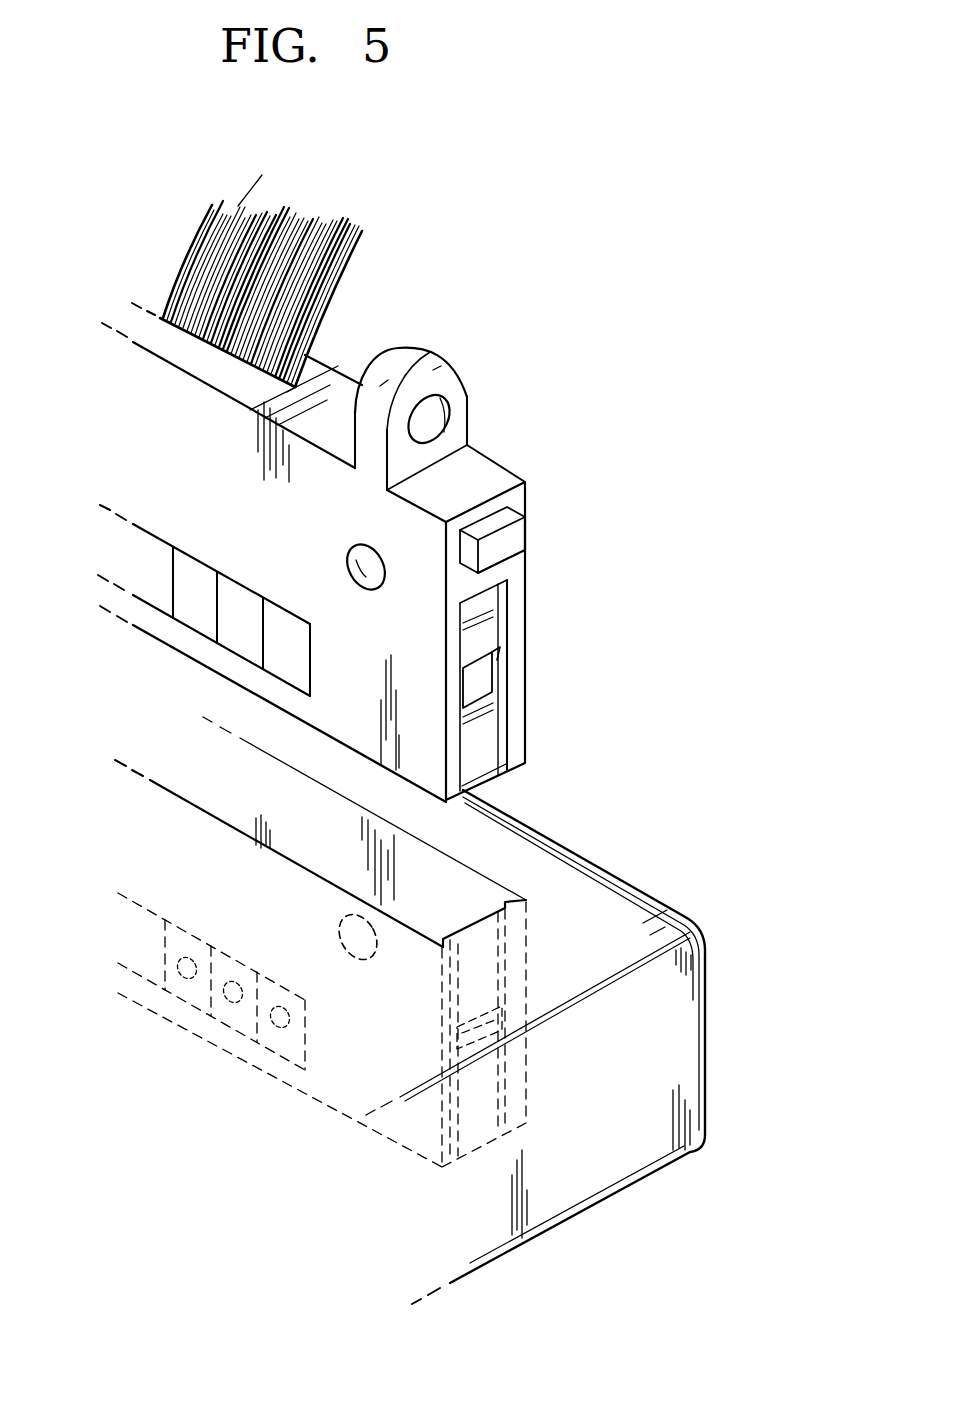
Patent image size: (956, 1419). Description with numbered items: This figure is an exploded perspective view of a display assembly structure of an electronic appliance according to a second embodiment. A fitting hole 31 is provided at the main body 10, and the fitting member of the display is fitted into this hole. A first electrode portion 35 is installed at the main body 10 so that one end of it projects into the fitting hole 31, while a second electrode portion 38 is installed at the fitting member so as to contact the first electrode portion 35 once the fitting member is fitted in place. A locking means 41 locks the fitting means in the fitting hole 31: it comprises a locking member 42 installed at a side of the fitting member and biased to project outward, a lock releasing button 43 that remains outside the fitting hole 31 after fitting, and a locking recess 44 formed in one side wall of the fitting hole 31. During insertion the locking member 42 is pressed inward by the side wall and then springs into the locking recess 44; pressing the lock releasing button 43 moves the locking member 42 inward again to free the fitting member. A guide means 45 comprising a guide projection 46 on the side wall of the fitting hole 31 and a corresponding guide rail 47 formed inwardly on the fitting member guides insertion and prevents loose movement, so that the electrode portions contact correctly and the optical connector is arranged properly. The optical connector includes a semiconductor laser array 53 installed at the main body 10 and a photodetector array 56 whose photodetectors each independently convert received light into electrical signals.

The main body 10 is at (656, 1275).
The fitting hole 31 is at (337, 851).
The first electrode portion 35 is at (341, 938).
The second electrode portion 38 is at (347, 566).
The locking means 41 is at (534, 531).
The locking member 42 is at (490, 676).
The lock releasing button 43 is at (525, 505).
The locking recess 44 is at (500, 1009).
The guide means 45 is at (627, 747).
The guide projection 46 is at (480, 924).
The guide rail 47 is at (487, 737).
The semiconductor laser array 53 is at (181, 992).
The photodetector array 56 is at (199, 611).